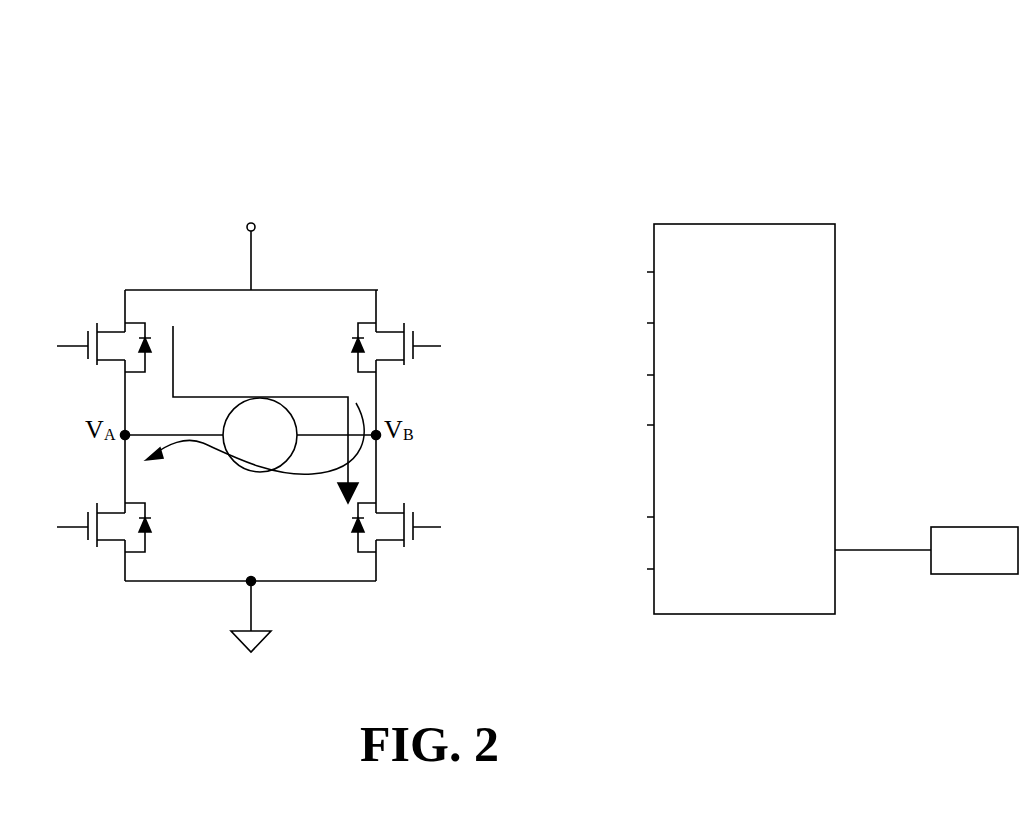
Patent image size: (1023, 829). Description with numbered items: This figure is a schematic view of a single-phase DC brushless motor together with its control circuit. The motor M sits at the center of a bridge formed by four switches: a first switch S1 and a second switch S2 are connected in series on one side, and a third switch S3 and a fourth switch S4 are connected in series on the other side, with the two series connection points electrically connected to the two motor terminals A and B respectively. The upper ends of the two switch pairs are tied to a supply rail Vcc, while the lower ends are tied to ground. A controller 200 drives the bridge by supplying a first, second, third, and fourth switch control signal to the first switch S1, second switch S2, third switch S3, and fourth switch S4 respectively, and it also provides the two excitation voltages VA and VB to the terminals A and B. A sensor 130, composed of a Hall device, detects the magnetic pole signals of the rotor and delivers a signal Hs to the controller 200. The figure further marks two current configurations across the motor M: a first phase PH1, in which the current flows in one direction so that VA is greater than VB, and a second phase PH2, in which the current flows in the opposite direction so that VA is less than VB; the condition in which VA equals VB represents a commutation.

The controller 200 is at (735, 250).
The sensor 130 is at (978, 543).
The first switch S1 is at (86, 347).
The second switch S2 is at (86, 527).
The third switch S3 is at (413, 347).
The fourth switch S4 is at (413, 527).
The motor M is at (251, 435).
The Hall sensor signal Hs is at (883, 534).
The supply voltage Vcc is at (251, 236).
The first phase PH1 is at (265, 414).
The second phase PH2 is at (255, 458).